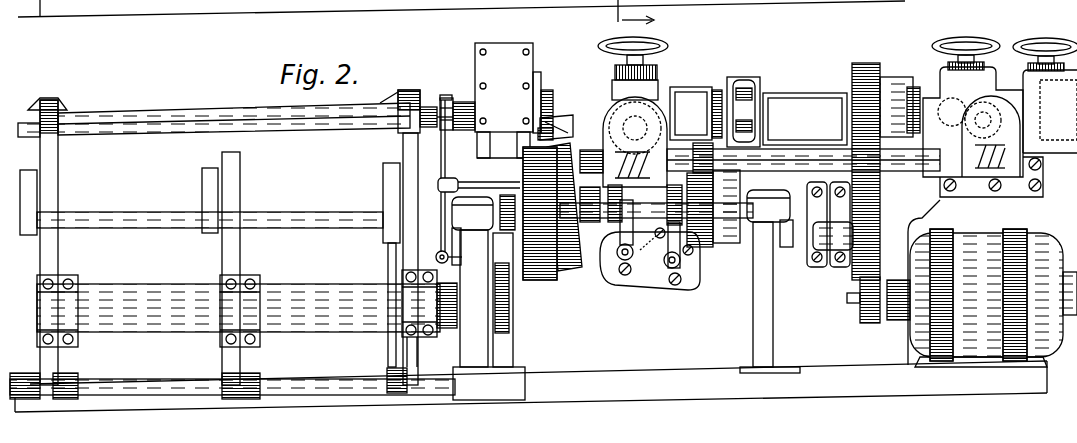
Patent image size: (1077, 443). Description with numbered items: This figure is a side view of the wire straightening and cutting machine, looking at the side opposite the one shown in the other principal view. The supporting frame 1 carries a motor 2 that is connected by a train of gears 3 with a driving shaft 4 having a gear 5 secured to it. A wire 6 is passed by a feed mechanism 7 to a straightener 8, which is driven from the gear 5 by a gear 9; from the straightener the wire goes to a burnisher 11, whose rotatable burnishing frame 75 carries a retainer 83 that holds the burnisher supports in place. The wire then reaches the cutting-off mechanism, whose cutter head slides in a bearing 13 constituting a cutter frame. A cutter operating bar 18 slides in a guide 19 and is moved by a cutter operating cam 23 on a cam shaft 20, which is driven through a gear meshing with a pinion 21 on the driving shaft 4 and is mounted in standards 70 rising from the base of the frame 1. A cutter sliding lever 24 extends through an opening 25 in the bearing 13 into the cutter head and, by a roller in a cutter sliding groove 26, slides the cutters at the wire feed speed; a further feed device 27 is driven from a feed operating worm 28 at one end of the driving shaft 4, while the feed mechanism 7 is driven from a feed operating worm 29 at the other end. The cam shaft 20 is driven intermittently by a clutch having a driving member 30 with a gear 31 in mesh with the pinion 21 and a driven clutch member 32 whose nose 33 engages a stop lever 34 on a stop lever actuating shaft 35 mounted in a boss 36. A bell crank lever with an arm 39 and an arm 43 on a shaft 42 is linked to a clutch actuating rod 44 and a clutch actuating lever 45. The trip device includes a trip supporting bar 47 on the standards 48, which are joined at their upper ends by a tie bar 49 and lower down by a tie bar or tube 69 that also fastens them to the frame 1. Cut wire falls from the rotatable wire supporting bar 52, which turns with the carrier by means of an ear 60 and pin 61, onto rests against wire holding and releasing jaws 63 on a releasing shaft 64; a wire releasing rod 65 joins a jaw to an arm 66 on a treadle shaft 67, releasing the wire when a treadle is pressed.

The supporting frame 1 is at (679, 343).
The motor 2 is at (1044, 244).
The train of gears 3 is at (878, 261).
The driving shaft 4 is at (897, 162).
The gear 5 is at (892, 193).
The wire 6 is at (1060, 128).
The feed mechanism 7 is at (1000, 86).
The straightener 8 is at (800, 100).
The gear 9 is at (880, 76).
The burnisher 11 is at (721, 107).
The bearing 13 is at (536, 85).
The cutter operating bar 18 is at (508, 163).
The guide 19 is at (477, 72).
The cam shaft 20 is at (808, 186).
The pinion 21 is at (700, 143).
The cutter operating cam 23 is at (540, 275).
The cutter sliding lever 24 is at (563, 118).
The opening 25 is at (578, 130).
The cutter sliding groove 26 is at (566, 273).
The feed device 27 is at (637, 58).
The feed operating worm 28 is at (623, 142).
The feed operating worm 29 is at (1040, 180).
The driving member 30 is at (703, 247).
The gear 31 is at (728, 244).
The driven clutch member 32 is at (664, 262).
The nose 33 is at (608, 183).
The stop lever 34 is at (678, 270).
The stop lever actuating shaft 35 is at (669, 283).
The boss 36 is at (650, 239).
The arm 39 is at (626, 276).
The shaft 42 is at (620, 258).
The arm 43 is at (614, 241).
The clutch actuating rod 44 is at (510, 163).
The clutch actuating lever 45 is at (444, 150).
The trip supporting bar 47 is at (20, 124).
The standards 48 is at (50, 173).
The tie bar 49 is at (137, 112).
The wire supporting bar 52 is at (157, 132).
The ear 60 is at (458, 127).
The pin 61 is at (470, 116).
The wire holding and releasing jaws 63 is at (30, 198).
The releasing shaft 64 is at (290, 213).
The wire releasing rod 65 is at (390, 260).
The arm 66 is at (390, 370).
The treadle shaft 67 is at (311, 369).
The tie bar or tube 69 is at (299, 292).
The standards 70 is at (490, 356).
The burnishing frame 75 is at (716, 90).
The retainer 83 is at (700, 87).